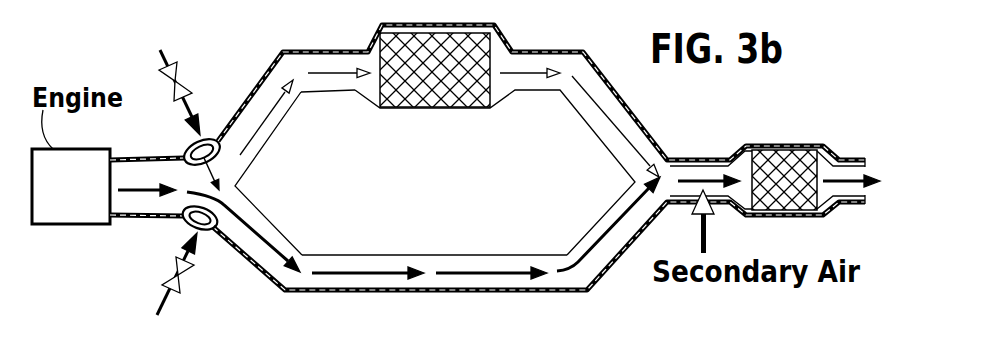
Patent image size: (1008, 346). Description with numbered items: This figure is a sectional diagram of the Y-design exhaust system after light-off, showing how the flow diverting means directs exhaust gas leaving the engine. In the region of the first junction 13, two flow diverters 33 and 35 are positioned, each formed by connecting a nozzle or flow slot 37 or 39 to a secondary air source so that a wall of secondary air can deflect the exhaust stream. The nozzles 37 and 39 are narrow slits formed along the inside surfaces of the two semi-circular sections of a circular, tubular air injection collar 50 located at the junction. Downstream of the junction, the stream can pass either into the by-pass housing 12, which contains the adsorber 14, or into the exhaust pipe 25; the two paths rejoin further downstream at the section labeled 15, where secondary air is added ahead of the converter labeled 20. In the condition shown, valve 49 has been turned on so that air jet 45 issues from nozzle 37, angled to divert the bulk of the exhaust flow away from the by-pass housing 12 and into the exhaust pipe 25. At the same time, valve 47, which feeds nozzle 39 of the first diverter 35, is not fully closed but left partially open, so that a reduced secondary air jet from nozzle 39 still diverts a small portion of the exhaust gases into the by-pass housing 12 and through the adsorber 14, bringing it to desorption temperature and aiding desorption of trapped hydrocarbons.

The by-pass housing 12 is at (270, 66).
The first junction 13 is at (163, 232).
The adsorber 14 is at (411, 107).
The downstream exhaust pipe 15 is at (680, 137).
The second catalytic converter 20 is at (792, 148).
The exhaust pipe 25 is at (432, 254).
The flow diverter 33 is at (142, 56).
The first diverter 35 is at (142, 296).
The nozzle 37 is at (183, 183).
The nozzle 39 is at (208, 232).
The secondary air jet 45 is at (243, 185).
The valve 47 is at (188, 292).
The valve 49 is at (186, 86).
The air injection collar 50 is at (183, 144).